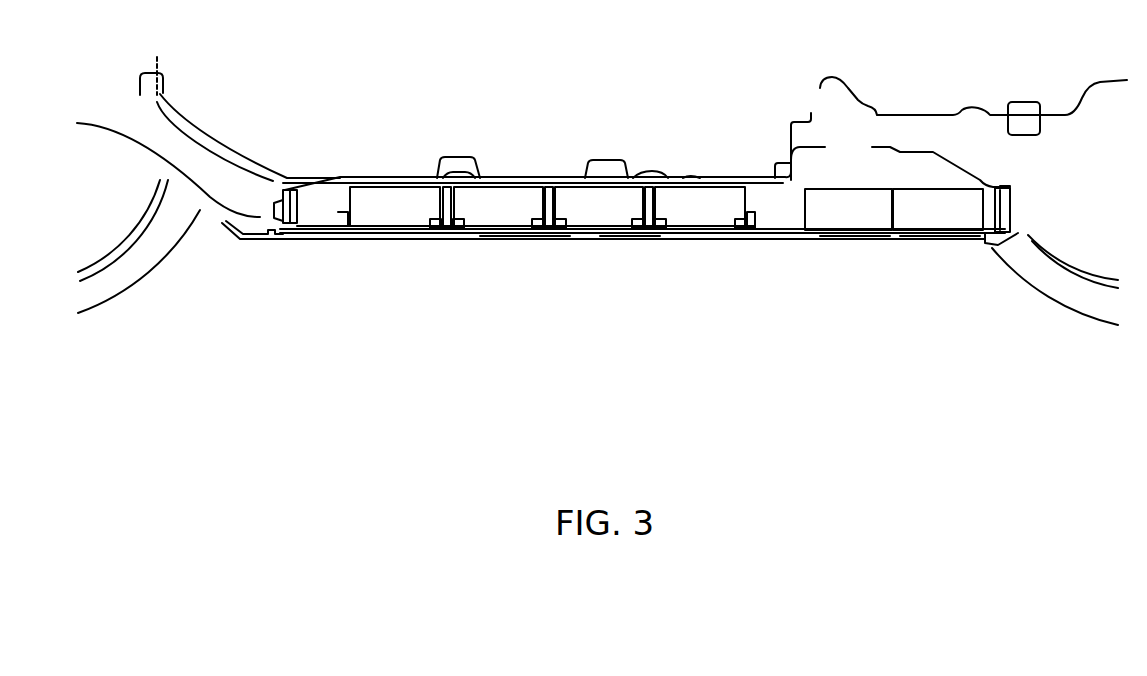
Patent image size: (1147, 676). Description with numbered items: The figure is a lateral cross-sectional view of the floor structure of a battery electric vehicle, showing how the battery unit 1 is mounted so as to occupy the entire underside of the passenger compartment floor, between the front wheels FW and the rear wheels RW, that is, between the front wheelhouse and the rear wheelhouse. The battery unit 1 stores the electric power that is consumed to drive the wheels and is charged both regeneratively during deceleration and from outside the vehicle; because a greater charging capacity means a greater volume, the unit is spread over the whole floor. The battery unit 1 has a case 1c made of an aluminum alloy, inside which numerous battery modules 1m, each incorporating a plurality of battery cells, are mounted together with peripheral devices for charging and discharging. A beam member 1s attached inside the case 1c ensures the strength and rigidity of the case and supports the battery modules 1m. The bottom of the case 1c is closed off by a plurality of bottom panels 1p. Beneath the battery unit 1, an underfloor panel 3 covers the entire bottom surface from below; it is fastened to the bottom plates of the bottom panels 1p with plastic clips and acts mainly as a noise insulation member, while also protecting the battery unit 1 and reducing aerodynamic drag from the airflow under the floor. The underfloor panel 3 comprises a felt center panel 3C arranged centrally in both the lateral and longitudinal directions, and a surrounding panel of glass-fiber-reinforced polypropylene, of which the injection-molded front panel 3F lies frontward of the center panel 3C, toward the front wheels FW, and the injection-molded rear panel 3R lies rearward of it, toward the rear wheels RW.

The battery unit 1 is at (995, 178).
The battery module 1m is at (504, 195).
The beam member 1s is at (651, 214).
The bottom panel 1p is at (465, 228).
The case 1c is at (791, 146).
The underfloor panel 3 is at (544, 261).
The front panel 3F is at (272, 241).
The center panel 3C is at (620, 239).
The rear panel 3R is at (944, 239).
The front wheel FW is at (110, 300).
The rear wheel RW is at (1072, 303).